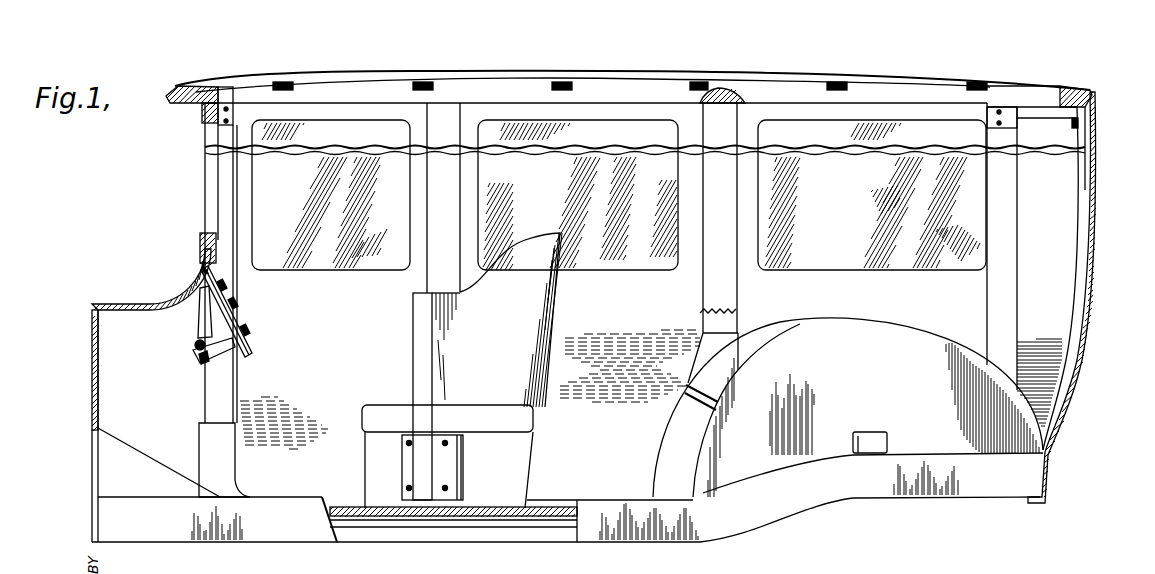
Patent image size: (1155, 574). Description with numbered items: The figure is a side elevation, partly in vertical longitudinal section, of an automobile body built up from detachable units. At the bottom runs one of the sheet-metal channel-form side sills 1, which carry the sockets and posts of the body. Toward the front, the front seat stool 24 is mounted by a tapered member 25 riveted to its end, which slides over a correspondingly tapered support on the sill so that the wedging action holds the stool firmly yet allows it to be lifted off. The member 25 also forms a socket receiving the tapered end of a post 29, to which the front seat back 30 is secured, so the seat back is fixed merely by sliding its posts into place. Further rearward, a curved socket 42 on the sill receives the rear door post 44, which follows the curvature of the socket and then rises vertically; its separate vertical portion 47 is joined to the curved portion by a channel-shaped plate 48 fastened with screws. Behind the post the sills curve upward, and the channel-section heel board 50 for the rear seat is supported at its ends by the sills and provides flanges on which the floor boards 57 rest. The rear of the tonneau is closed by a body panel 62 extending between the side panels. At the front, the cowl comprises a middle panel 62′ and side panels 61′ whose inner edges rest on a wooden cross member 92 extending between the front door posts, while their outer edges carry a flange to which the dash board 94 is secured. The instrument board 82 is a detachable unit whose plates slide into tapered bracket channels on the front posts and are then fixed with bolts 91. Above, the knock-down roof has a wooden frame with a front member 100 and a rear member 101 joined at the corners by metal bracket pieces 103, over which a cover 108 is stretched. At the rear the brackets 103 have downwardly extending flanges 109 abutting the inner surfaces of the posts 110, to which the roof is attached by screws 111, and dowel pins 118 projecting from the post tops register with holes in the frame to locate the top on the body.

The side sill 1 is at (458, 528).
The front seat stool 24 is at (378, 453).
The tapered member 25 is at (437, 468).
The post 29 is at (423, 362).
The front seat back 30 is at (535, 306).
The socket 42 is at (676, 449).
The rear post 44 is at (688, 392).
The vertical portion of the post 47 is at (705, 321).
The channel shaped plate 48 is at (727, 370).
The heel board 50 is at (860, 507).
The floor boards 57 is at (553, 505).
The side panel 61′ is at (130, 358).
The panel 62 is at (1087, 300).
The middle panel 62′ is at (117, 304).
The instrument board 82 is at (238, 322).
The bolts 91 is at (196, 344).
The wooden cross member 92 is at (203, 248).
The dash board 94 is at (94, 412).
The front member 100 is at (171, 100).
The rear member 101 is at (1086, 96).
The metal bracket piece 103 is at (228, 88).
The cover 108 is at (650, 68).
The downwardly extending flange 109 is at (987, 118).
The post 110 is at (1083, 188).
The screws 111 is at (1003, 113).
The dowel pin 118 is at (730, 87).